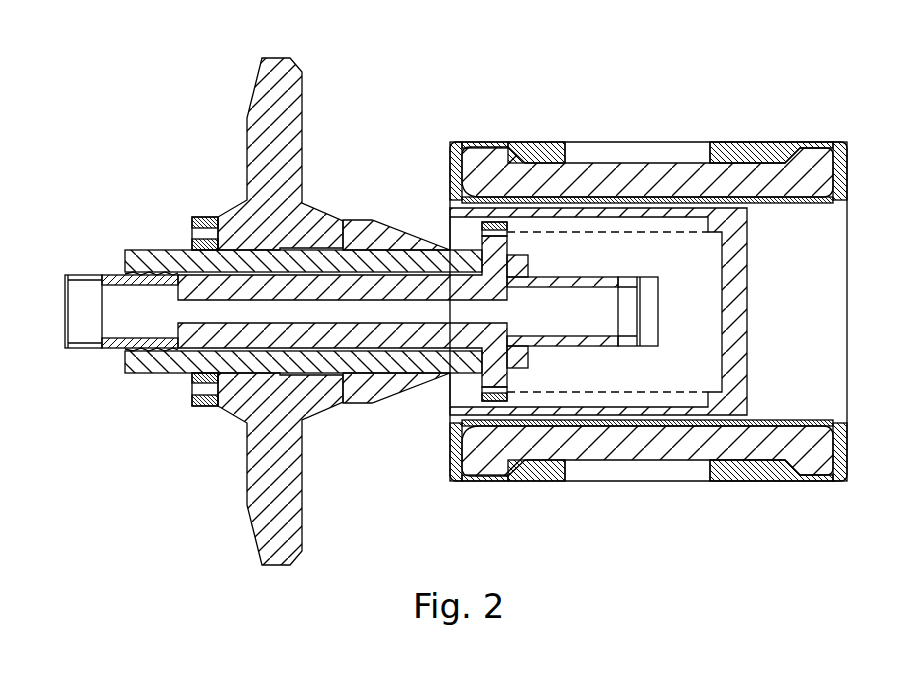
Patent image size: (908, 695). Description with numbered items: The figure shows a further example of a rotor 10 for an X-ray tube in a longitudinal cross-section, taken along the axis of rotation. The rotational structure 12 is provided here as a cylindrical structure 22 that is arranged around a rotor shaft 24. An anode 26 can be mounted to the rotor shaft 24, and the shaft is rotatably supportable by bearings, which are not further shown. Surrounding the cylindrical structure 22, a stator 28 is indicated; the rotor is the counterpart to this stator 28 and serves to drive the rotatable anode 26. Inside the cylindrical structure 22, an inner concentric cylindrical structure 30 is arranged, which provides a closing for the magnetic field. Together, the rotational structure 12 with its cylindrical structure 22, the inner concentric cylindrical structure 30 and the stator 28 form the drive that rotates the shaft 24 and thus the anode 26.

The pump assembly 10 is at (522, 96).
The rotational structure 12 is at (600, 127).
The cylindrical structure 22 is at (667, 212).
The rotor shaft 24 is at (365, 293).
The anode 26 is at (277, 128).
The stator 28 is at (797, 177).
The inner concentric cylindrical structure 30 is at (568, 232).